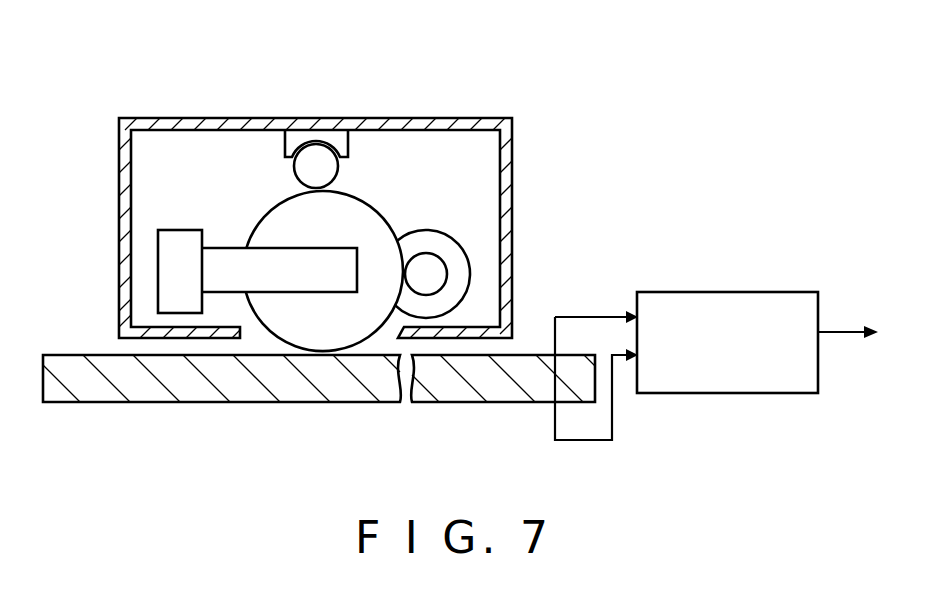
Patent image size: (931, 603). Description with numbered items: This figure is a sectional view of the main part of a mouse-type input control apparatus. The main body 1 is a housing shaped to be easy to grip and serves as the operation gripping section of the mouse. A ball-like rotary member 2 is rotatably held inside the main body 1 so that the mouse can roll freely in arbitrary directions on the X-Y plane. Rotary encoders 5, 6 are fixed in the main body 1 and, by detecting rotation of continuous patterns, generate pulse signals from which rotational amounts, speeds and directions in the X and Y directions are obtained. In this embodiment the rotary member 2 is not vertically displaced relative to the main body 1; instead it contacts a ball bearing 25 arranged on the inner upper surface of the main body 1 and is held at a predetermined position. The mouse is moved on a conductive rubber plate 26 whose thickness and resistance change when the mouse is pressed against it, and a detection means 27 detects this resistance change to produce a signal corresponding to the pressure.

The main body 1 is at (513, 186).
The rotary member 2 is at (375, 210).
The rotary encoder 5 is at (168, 250).
The rotary encoder 6 is at (458, 272).
The ball bearing 25 is at (294, 165).
The conductive rubber plate 26 is at (242, 388).
The detection means 27 is at (722, 292).